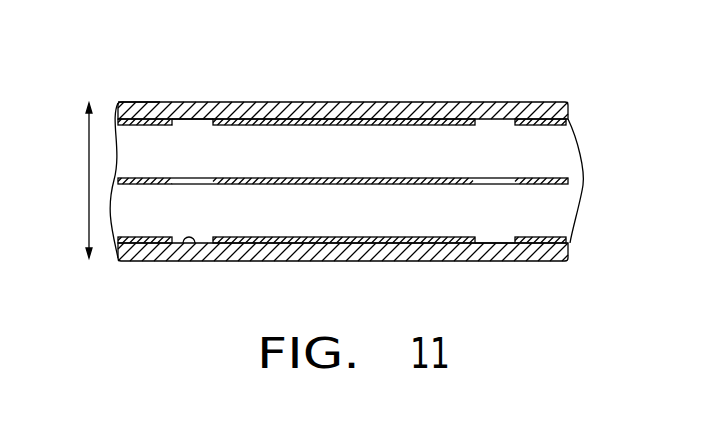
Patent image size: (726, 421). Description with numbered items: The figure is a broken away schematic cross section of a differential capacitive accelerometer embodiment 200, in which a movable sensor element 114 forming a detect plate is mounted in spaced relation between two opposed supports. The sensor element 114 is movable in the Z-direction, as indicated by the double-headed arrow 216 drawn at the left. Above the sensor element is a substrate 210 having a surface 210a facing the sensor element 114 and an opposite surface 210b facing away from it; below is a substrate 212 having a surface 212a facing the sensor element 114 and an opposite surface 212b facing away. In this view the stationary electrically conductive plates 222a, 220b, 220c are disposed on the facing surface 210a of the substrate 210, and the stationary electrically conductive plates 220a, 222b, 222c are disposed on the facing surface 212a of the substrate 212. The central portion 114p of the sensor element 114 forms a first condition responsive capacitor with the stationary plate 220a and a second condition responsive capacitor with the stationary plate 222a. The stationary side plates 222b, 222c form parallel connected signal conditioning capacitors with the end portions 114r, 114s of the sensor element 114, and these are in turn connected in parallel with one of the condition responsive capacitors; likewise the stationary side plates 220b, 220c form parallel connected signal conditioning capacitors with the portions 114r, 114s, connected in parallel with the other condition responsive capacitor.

The embodiment 200 is at (397, 82).
The substrate 210 is at (237, 110).
The surface 210a is at (193, 121).
The surface 210b is at (157, 103).
The substrate 212 is at (402, 252).
The surface 212a is at (195, 244).
The surface 212b is at (495, 262).
The arrow 216 is at (89, 180).
The stationary electrically conductive plate 220a is at (328, 244).
The stationary side plate 220b is at (140, 125).
The stationary side plate 220c is at (532, 125).
The stationary electrically conductive plate 222a is at (270, 126).
The stationary side plate 222b is at (148, 243).
The stationary side plate 222c is at (540, 244).
The sensor element 114 is at (551, 187).
The portion of sensor element 114r is at (155, 184).
The portion of sensor element 114p is at (288, 184).
The portion of sensor element 114s is at (527, 184).